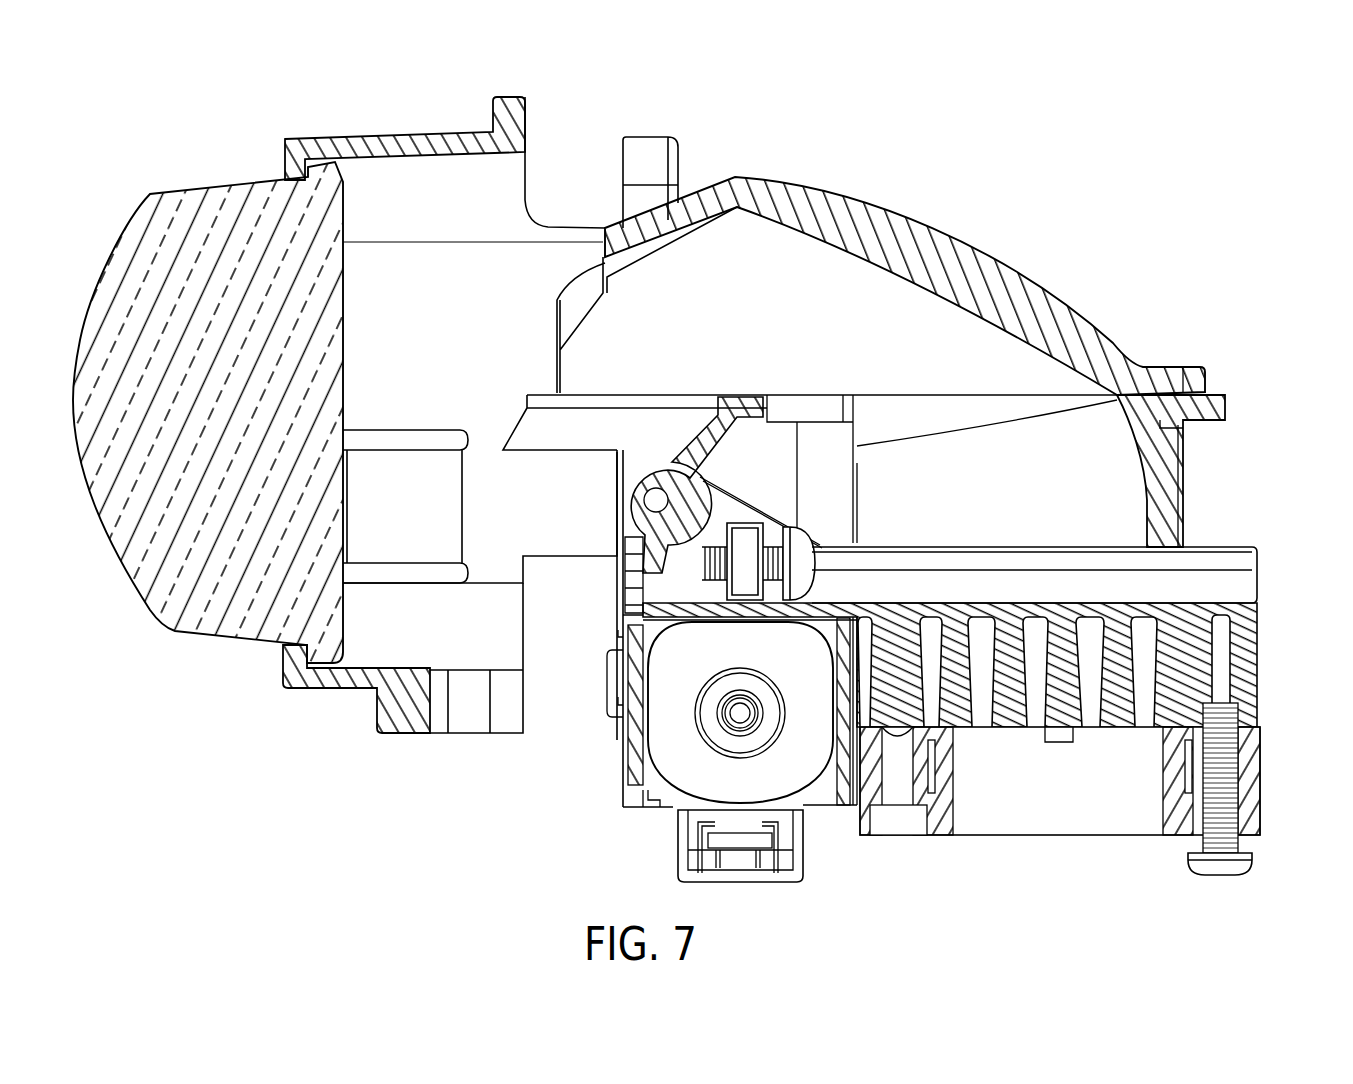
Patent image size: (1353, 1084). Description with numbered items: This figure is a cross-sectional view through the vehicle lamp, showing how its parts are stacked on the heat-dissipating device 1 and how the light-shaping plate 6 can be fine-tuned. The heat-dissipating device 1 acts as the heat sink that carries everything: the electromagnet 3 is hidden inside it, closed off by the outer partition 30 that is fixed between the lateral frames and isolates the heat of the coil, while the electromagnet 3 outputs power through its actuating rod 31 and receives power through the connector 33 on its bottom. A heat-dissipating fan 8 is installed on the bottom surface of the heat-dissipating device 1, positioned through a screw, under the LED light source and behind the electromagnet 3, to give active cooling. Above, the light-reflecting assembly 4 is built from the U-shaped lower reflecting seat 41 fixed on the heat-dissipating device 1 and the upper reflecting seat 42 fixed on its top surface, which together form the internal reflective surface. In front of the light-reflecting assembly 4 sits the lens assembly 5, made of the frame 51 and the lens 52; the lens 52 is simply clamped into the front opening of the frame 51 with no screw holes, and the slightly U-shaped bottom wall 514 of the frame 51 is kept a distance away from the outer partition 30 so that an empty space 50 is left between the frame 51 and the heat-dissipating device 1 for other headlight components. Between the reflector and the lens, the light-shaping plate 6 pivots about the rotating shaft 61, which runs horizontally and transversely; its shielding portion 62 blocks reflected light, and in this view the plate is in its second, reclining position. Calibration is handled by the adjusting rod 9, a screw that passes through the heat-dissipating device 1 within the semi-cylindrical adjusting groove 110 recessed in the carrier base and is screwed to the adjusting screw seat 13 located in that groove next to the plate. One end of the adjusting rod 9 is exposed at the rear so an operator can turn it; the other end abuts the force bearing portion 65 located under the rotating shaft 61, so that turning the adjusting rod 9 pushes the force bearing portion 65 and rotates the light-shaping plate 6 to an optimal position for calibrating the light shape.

The heat-dissipating device 1 is at (1259, 653).
The electromagnet 3 is at (814, 876).
The light-reflecting assembly 4 is at (1022, 248).
The lens assembly 5 is at (332, 100).
The light-shaping plate 6 is at (528, 393).
The heat-dissipating fan 8 is at (1096, 845).
The adjusting rod 9 is at (815, 546).
The adjusting screw seat 13 is at (745, 532).
The outer partition 30 is at (636, 745).
The actuating rod 31 is at (702, 733).
The connector 33 is at (740, 877).
The lower reflecting seat 41 is at (1180, 470).
The upper reflecting seat 42 is at (1062, 305).
The empty space 50 is at (548, 668).
The frame 51 is at (360, 128).
The lens 52 is at (212, 188).
The rotating shaft 61 is at (657, 496).
The shielding portion 62 is at (680, 420).
The force bearing portion 65 is at (645, 570).
The adjusting groove 110 is at (1195, 580).
The bottom wall 514 is at (332, 690).